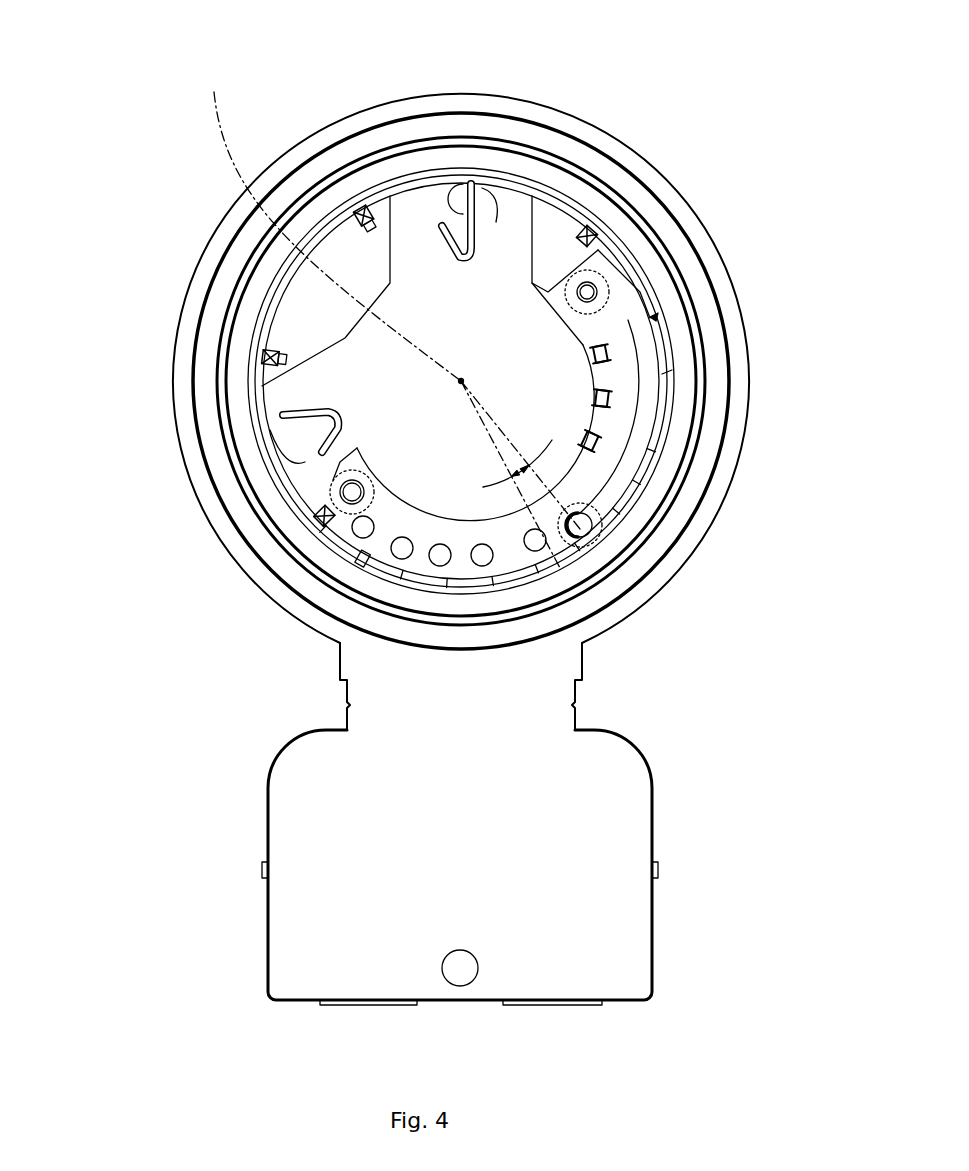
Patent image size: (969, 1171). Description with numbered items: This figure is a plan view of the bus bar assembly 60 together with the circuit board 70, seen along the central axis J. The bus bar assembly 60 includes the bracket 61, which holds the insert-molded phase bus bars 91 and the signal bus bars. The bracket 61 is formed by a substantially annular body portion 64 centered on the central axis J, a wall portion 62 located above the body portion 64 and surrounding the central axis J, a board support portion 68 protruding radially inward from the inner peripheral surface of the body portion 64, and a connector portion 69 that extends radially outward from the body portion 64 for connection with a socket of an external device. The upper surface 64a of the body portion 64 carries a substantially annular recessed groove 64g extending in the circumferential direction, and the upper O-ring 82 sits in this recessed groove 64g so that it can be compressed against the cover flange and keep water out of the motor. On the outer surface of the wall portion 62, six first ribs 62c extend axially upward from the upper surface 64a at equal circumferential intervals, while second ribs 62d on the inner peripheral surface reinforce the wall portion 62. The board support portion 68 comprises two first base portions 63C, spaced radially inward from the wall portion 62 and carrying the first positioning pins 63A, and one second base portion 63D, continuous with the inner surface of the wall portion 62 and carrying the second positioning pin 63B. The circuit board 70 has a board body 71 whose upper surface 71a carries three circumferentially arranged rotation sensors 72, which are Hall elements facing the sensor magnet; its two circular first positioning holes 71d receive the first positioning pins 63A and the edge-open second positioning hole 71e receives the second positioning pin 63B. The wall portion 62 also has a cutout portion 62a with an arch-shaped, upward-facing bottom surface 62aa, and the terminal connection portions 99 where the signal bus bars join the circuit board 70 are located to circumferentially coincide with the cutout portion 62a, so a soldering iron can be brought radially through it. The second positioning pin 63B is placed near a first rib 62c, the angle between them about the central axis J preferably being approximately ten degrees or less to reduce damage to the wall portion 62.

The bus bar assembly 60 is at (407, 86).
The bracket 61 is at (361, 110).
The wall portion 62 is at (280, 277).
The cutout portion 62a is at (362, 563).
The bottom surface 62aa is at (440, 590).
The first rib 62c is at (353, 193).
The second rib 62d is at (378, 222).
The first positioning pin 63A is at (593, 283).
The second positioning pin 63B is at (590, 530).
The first base portion 63C is at (600, 258).
The second base portion 63D is at (603, 513).
The body portion 64 is at (193, 263).
The upper surface 64a is at (192, 302).
The recessed groove 64g is at (207, 333).
The board support portion 68 is at (543, 220).
The connector portion 69 is at (655, 797).
The circuit board 70 is at (660, 315).
The board body 71 is at (640, 350).
The upper surface 71a is at (672, 370).
The first positioning hole 71d is at (613, 300).
The second positioning hole 71e is at (643, 452).
The rotation sensor 72 is at (582, 441).
The upper O-ring 82 is at (207, 353).
The phase bus bar 91 is at (505, 197).
The terminal connection portion 99 is at (440, 544).
The central axis J is at (331, 224).